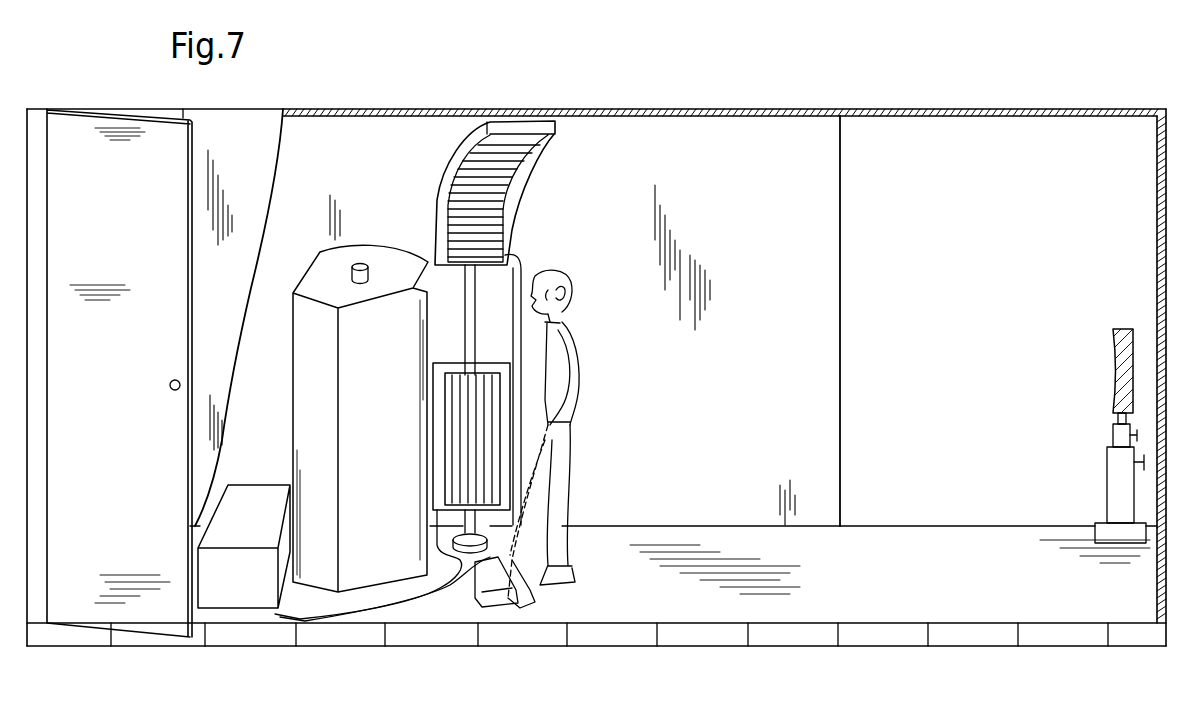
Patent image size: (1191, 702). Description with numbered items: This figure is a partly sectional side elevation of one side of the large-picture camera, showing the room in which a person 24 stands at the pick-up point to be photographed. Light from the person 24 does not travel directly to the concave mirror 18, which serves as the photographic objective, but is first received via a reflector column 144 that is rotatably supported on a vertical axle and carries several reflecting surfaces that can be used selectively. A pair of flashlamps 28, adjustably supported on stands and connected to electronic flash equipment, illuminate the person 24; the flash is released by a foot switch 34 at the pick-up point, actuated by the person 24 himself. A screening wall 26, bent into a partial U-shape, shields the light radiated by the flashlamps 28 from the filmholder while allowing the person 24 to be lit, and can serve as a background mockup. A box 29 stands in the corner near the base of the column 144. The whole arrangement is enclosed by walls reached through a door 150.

The concave mirror 18 is at (1125, 372).
The person to be photographed 24 is at (572, 428).
The screening wall 26 is at (822, 297).
The flashlamps 28 is at (511, 192).
The cabinet box 29 is at (248, 498).
The foot switch 34 is at (490, 607).
The reflector column 144 is at (317, 274).
The door 150 is at (146, 620).